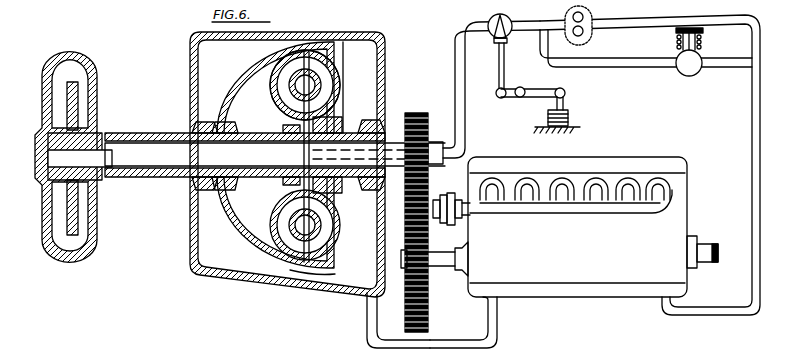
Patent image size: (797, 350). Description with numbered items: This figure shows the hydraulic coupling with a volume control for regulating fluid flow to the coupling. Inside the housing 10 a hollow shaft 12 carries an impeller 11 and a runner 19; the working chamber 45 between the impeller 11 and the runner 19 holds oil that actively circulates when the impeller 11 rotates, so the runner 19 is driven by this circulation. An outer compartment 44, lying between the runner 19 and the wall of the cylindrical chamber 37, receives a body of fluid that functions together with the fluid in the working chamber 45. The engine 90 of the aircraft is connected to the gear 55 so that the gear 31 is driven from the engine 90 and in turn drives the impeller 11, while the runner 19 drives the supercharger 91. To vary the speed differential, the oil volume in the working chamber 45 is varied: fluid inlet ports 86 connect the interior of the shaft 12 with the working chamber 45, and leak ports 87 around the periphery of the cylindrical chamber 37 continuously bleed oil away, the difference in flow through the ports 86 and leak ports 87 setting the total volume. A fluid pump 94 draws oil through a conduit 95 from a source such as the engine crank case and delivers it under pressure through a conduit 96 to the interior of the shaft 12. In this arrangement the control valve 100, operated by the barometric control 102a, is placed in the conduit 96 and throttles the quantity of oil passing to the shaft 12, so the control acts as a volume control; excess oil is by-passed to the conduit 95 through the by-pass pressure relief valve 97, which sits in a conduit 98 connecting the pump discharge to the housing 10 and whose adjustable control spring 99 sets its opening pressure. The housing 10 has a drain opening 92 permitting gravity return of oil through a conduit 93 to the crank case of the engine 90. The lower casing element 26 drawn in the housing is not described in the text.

The housing 10 is at (190, 63).
The impeller 11 is at (332, 74).
The shaft 12 is at (168, 150).
The runner 19 is at (270, 93).
The lower pump casing 26 is at (258, 180).
The gear 31 is at (425, 112).
The cylindrical chamber 37 is at (238, 70).
The outer compartment 44 is at (244, 111).
The working chamber 45 is at (338, 80).
The gear 55 is at (431, 298).
The fluid inlet ports 86 is at (333, 120).
The leak ports 87 is at (335, 274).
The engine 90 is at (590, 297).
The supercharger 91 is at (94, 62).
The drain opening 92 is at (370, 302).
The conduit 93 is at (468, 340).
The fluid pump 94 is at (606, 12).
The conduit 95 is at (757, 107).
The conduit 96 is at (462, 80).
The by-pass pressure relief valve 97 is at (701, 57).
The conduit 98 is at (642, 63).
The adjustable control spring 99 is at (697, 30).
The control valve 100 is at (514, 9).
The barometric control 102a is at (572, 118).